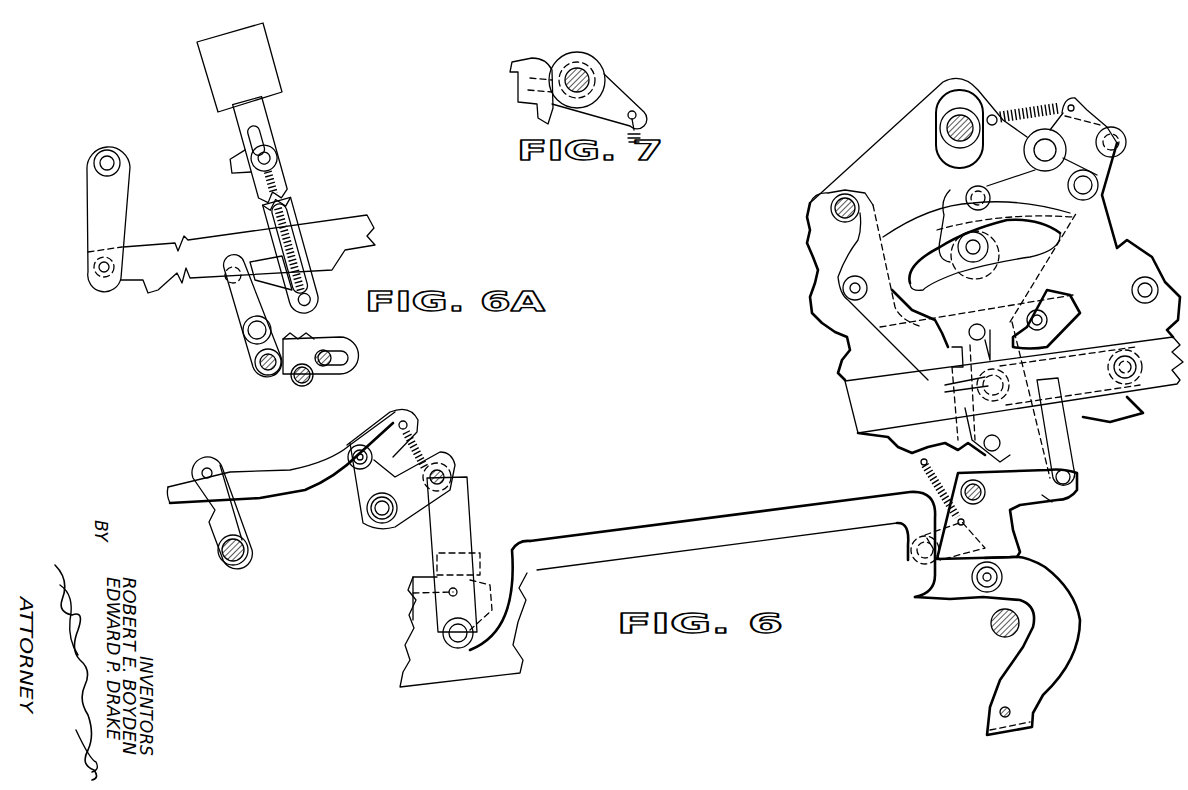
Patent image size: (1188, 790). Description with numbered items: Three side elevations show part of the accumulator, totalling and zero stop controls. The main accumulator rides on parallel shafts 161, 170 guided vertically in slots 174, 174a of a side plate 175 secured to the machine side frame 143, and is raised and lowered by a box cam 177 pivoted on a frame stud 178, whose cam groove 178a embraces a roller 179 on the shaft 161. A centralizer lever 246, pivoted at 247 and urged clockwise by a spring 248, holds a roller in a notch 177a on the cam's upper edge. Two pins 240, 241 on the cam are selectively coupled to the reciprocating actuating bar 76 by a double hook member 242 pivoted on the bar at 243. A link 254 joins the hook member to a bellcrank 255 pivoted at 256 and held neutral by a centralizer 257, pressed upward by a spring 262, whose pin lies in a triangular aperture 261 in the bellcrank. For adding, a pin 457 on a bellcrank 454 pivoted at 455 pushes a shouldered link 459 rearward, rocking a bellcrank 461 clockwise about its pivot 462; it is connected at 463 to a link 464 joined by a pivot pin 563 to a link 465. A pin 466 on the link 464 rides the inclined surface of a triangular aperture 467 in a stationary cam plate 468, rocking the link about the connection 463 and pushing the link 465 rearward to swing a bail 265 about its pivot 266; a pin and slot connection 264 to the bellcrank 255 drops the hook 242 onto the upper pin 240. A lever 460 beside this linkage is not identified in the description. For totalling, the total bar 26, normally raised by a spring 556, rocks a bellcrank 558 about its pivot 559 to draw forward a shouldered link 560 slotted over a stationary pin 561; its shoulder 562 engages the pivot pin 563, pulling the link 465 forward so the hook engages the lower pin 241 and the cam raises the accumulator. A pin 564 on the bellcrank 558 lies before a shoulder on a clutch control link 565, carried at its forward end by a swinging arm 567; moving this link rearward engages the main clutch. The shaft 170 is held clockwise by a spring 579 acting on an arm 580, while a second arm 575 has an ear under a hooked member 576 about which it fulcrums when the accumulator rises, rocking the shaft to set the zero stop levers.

In FIG. 6A, the actuating member 26 is at (264, 36).
In FIG. 6A, the arm 567 is at (128, 225).
In FIG. 6A, the pin 556 is at (278, 182).
In FIG. 6A, the bar 565 is at (325, 222).
In FIG. 6A, the pivot 564 is at (228, 282).
In FIG. 6A, the link 558 is at (226, 308).
In FIG. 6A, the pivot pin 559 is at (243, 334).
In FIG. 6A, the latch member 560 is at (322, 338).
In FIG. 6A, the pin 561 is at (330, 366).
In FIG. 6A, the pin 562 is at (308, 386).
In FIG. 6A, the pivot pin 563 is at (280, 378).
In FIG. 6, the pivot pin 563 is at (440, 660).
In FIG. 7, the bushing 575 is at (555, 60).
In FIG. 7, the shaft 170 is at (582, 72).
In FIG. 6, the shaft 170 is at (940, 118).
In FIG. 7, the bracket 576 is at (512, 77).
In FIG. 7, the arm 580 is at (615, 100).
In FIG. 7, the spring 579 is at (640, 134).
In FIG. 6, the bracket 175 is at (868, 150).
In FIG. 6, the slot 174a is at (948, 152).
In FIG. 6, the spring 248 is at (1046, 104).
In FIG. 6, the bracket 246 is at (1080, 108).
In FIG. 6, the pivot 247 is at (1097, 185).
In FIG. 6, the frame 143 is at (1130, 245).
In FIG. 6, the lever 178a is at (950, 190).
In FIG. 6, the pin 177a is at (978, 186).
In FIG. 6, the plate 177 is at (921, 222).
In FIG. 6, the pivot 161 is at (985, 246).
In FIG. 6, the cam 179 is at (985, 258).
In FIG. 6, the arm 174 is at (960, 283).
In FIG. 6, the pin 240 is at (968, 337).
In FIG. 6, the pivot 178 is at (975, 392).
In FIG. 6, the bar 76 is at (1168, 338).
In FIG. 6, the pivot 243 is at (1125, 378).
In FIG. 6, the link 242 is at (1067, 448).
In FIG. 6, the pin 254 is at (1075, 478).
In FIG. 6, the pin 241 is at (985, 448).
In FIG. 6, the spring 262 is at (920, 468).
In FIG. 6, the rod 465 is at (850, 495).
In FIG. 6, the edge 255 is at (1050, 500).
In FIG. 6, the bell crank 256 is at (1008, 513).
In FIG. 6, the pivot 257 is at (985, 537).
In FIG. 6, the roller 261 is at (1000, 555).
In FIG. 6, the lever 265 is at (1062, 605).
In FIG. 6, the pivot 264 is at (940, 612).
In FIG. 6, the pin 266 is at (1000, 708).
In FIG. 6, the arm 454 is at (238, 527).
In FIG. 6, the pin 457 is at (200, 462).
In FIG. 6, the pivot 455 is at (248, 554).
In FIG. 6, the rod 459 is at (300, 467).
In FIG. 6, the lever 460 is at (352, 448).
In FIG. 6, the lever 461 is at (360, 497).
In FIG. 6, the pivot 462 is at (380, 520).
In FIG. 6, the spring 463 is at (452, 472).
In FIG. 6, the link 464 is at (462, 520).
In FIG. 6, the rod 467 is at (472, 548).
In FIG. 6, the pin 466 is at (415, 598).
In FIG. 6, the plate 468 is at (490, 676).